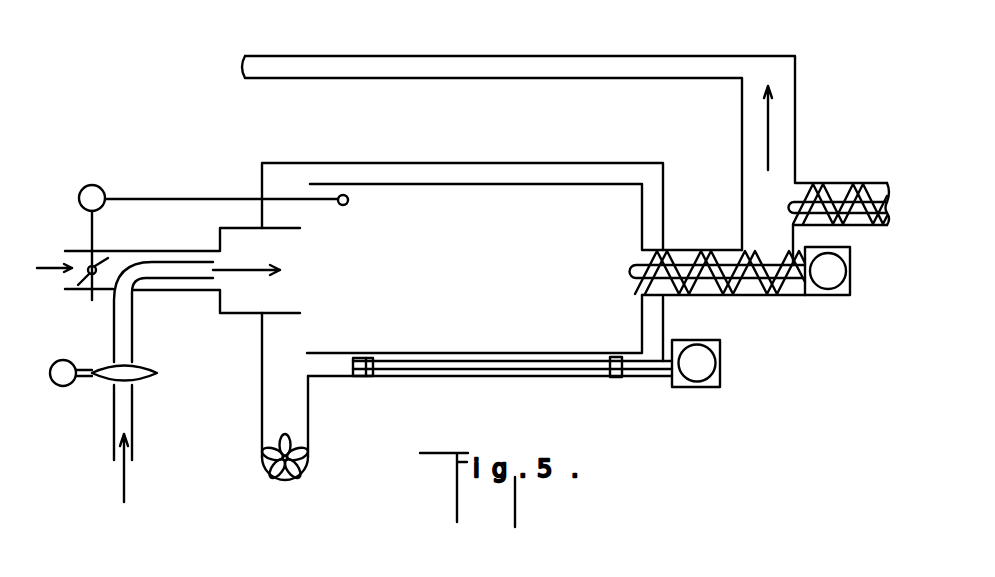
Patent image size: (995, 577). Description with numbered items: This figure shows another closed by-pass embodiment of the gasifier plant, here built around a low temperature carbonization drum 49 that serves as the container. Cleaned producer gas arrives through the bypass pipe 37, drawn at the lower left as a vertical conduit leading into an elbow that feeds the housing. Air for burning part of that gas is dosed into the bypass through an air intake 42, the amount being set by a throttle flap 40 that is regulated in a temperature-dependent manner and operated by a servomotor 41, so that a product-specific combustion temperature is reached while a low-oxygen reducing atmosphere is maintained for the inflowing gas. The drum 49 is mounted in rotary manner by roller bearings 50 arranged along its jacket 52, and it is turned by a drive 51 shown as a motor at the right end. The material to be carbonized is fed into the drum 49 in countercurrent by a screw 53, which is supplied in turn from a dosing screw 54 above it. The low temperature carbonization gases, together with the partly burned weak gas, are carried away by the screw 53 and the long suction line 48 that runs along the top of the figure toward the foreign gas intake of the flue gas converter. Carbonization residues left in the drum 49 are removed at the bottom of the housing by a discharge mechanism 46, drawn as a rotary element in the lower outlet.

The bypass pipe 37 is at (131, 435).
The throttle flap 40 is at (92, 300).
The servomotor 41 is at (157, 373).
The air intake 42 is at (72, 252).
The discharge mechanism 46 is at (272, 475).
The suction line 48 is at (355, 63).
The low temperature carbonization drum 49 is at (338, 333).
The roller bearings 50 is at (562, 377).
The drive 51 is at (720, 370).
The jacket 52 is at (475, 377).
The screw 53 is at (765, 290).
The dosing screw 54 is at (835, 183).